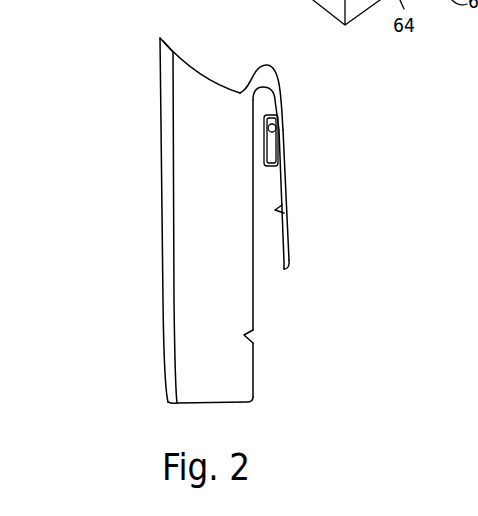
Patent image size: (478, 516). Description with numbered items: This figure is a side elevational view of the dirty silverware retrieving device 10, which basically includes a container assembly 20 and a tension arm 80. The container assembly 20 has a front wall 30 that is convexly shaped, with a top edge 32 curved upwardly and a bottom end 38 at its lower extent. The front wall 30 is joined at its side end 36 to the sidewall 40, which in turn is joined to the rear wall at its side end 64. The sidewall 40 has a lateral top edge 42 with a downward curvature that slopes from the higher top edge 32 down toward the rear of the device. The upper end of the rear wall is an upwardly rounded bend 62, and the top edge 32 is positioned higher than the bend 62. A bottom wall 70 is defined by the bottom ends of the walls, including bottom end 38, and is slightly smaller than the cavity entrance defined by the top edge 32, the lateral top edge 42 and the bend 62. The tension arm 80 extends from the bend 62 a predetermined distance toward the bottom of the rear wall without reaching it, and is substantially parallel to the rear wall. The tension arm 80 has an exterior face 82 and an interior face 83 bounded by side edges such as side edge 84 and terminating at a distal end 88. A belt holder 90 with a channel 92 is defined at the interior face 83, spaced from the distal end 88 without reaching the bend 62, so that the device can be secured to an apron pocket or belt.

The dirty silverware retrieving device 10 is at (341, 142).
The container assembly 20 is at (148, 84).
The front wall 30 is at (162, 168).
The top edge 32 is at (168, 40).
The side end 36 is at (173, 218).
The bottom end 38 is at (170, 404).
The sidewall 40 is at (210, 293).
The lateral top edge 42 is at (220, 83).
The bend 62 is at (265, 63).
The side end 64 is at (254, 338).
The bottom wall 70 is at (217, 402).
The tension arm 80 is at (296, 228).
The exterior face 82 is at (285, 180).
The interior face 83 is at (277, 209).
The side edge 84 is at (288, 251).
The distal end 88 is at (288, 270).
The belt holder 90 is at (270, 126).
The channel 92 is at (283, 128).